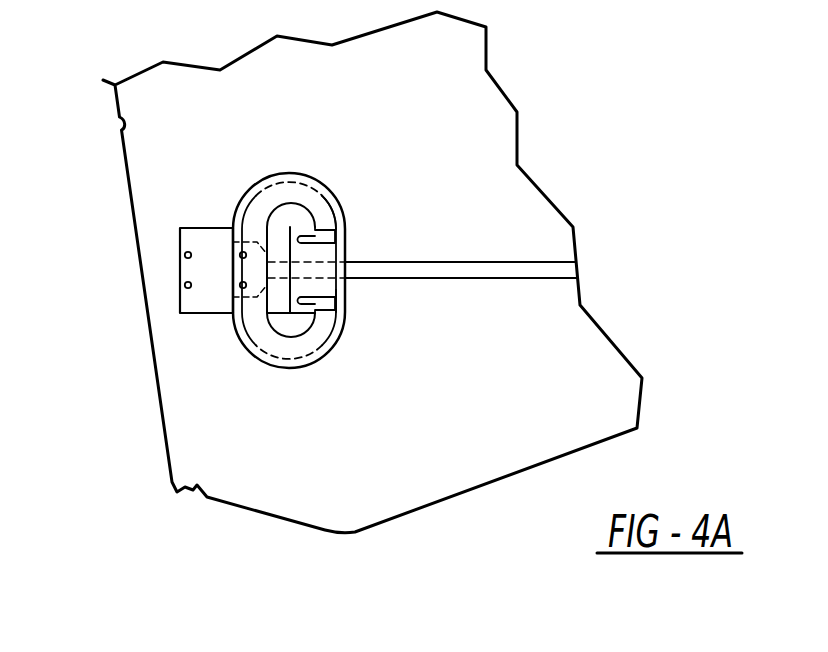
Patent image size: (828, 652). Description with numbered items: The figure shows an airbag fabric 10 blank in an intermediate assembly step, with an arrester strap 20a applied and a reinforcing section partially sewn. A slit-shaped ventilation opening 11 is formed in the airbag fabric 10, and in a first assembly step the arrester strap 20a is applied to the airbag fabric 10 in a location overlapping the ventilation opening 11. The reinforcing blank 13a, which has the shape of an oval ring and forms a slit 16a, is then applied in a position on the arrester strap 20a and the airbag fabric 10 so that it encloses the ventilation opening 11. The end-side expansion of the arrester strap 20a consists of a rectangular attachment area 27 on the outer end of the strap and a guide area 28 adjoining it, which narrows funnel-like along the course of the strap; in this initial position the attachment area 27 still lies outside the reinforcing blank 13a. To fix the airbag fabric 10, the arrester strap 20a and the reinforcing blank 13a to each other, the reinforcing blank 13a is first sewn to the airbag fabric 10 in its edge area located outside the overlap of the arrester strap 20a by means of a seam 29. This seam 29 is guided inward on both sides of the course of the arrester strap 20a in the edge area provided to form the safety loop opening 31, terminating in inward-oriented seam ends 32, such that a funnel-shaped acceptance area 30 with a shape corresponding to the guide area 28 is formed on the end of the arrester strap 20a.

The airbag fabric 10 is at (603, 408).
The ventilation opening 11 is at (345, 258).
The reinforcing blank 13a is at (343, 220).
The slit 16a is at (257, 282).
The arrester strap 20a is at (547, 270).
The attachment area 27 is at (205, 297).
The guide area 28 is at (245, 283).
The seam 29 is at (303, 187).
The acceptance area 30 is at (305, 288).
The safety loop opening 31 is at (345, 258).
The seam ends 32 is at (315, 240).